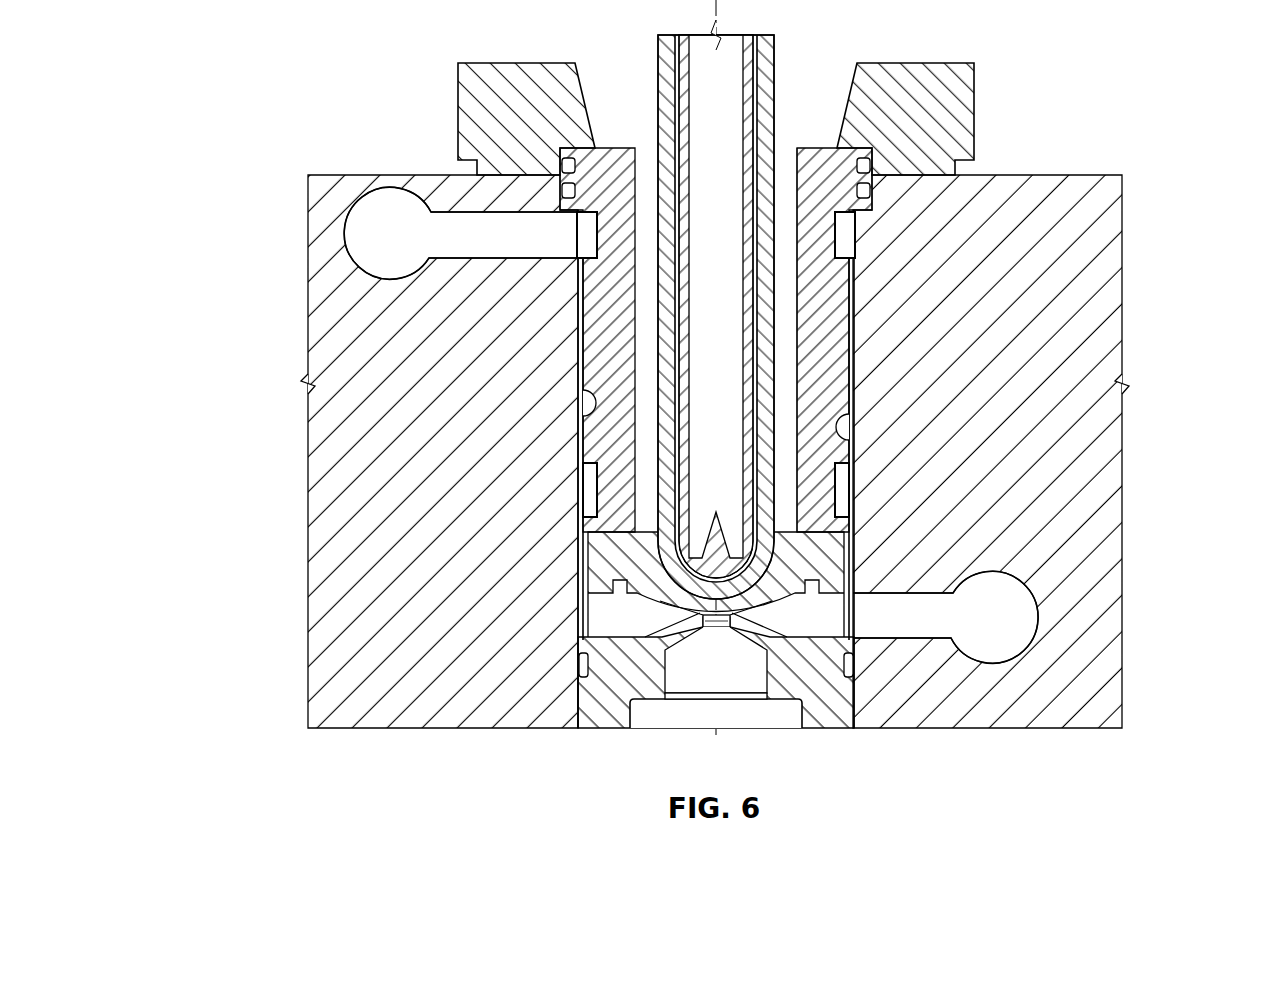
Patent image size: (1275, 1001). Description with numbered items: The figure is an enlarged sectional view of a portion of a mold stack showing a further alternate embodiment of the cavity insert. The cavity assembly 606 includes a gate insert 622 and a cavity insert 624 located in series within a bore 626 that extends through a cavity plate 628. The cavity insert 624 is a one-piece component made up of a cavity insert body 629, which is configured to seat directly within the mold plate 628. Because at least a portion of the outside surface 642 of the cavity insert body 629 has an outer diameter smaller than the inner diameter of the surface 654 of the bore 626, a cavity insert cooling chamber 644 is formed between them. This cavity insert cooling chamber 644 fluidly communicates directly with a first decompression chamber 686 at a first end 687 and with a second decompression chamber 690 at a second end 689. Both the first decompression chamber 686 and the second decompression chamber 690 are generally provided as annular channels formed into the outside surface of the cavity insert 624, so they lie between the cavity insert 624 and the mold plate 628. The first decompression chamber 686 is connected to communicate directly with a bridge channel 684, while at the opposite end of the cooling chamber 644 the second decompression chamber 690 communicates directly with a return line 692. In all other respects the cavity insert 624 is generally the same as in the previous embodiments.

The cavity assembly 606 is at (210, 633).
The gate insert 622 is at (613, 705).
The cavity insert 624 is at (813, 358).
The bore 626 is at (853, 442).
The cavity plate 628 is at (1100, 230).
The cavity insert body 629 is at (830, 332).
The outside surface 642 is at (580, 458).
The cavity insert cooling chamber 644 is at (580, 323).
The surface 654 is at (580, 420).
The bridge channel 684 is at (585, 565).
The first decompression chamber 686 is at (847, 490).
The first end 687 is at (850, 463).
The second end 689 is at (857, 273).
The second decompression chamber 690 is at (843, 233).
The return line 692 is at (480, 230).